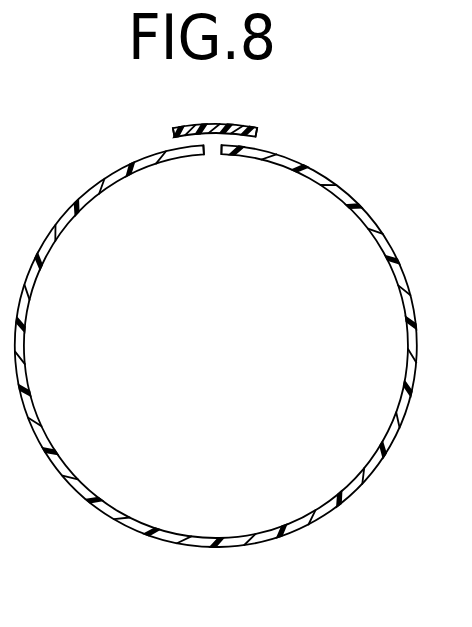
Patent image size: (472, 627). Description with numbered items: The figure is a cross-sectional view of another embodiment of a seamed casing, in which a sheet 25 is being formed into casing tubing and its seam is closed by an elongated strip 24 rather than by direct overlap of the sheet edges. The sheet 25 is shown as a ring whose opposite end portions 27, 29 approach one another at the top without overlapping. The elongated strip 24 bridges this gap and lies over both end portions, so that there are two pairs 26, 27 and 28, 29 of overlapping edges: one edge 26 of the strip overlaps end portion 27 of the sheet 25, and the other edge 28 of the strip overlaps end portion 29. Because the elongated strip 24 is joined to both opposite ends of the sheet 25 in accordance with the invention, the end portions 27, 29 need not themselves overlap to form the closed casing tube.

The elongated strip 24 is at (212, 123).
The sheet 25 is at (30, 397).
The overlapping edge of elongated strip 26 is at (182, 125).
The opposite end portion of sheet 27 is at (190, 152).
The overlapping edge of elongated strip 28 is at (253, 125).
The opposite end portion of sheet 29 is at (233, 152).